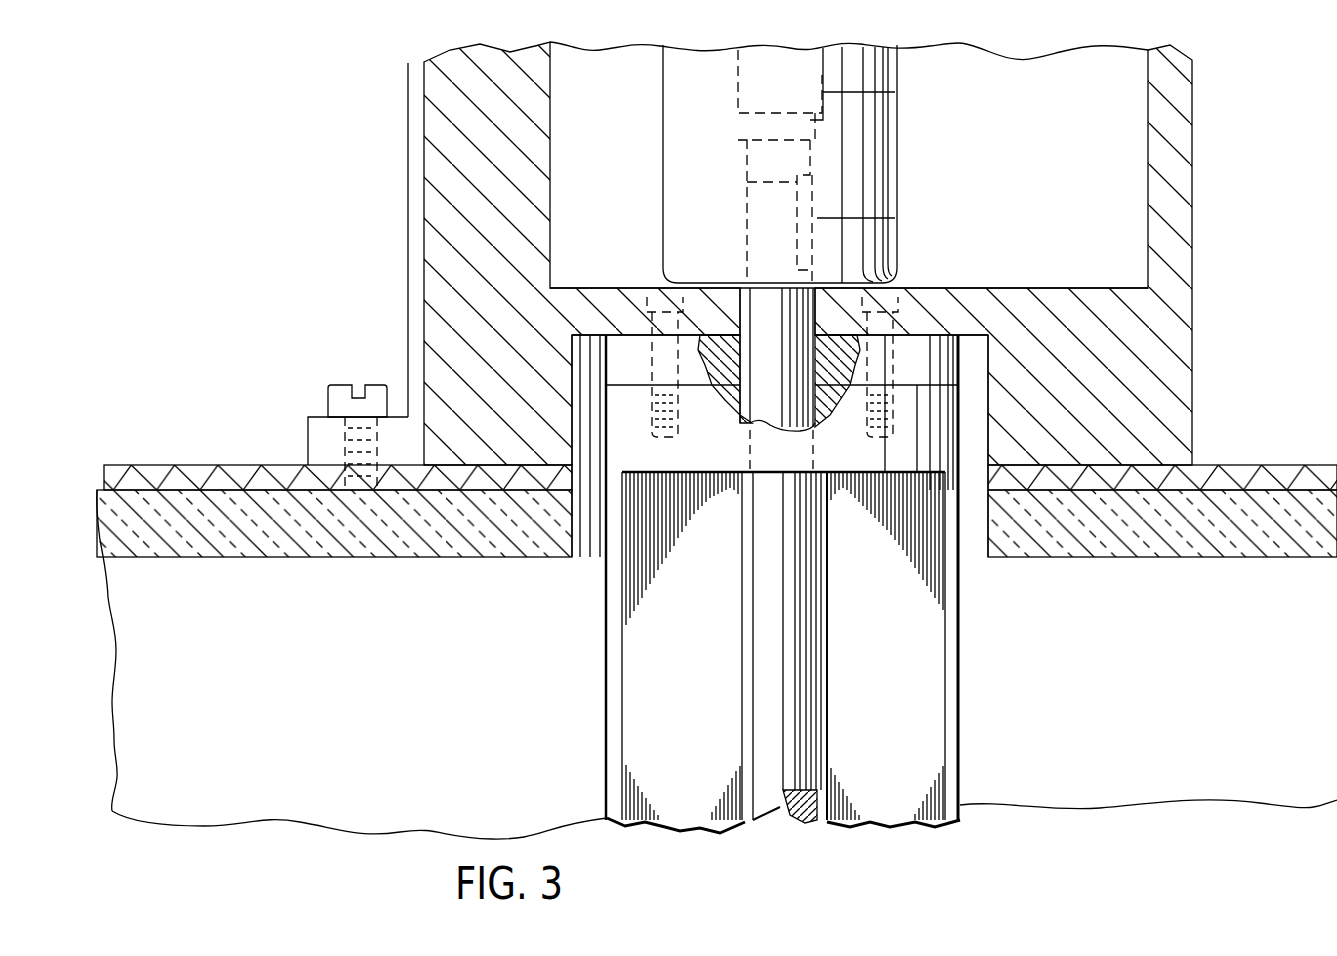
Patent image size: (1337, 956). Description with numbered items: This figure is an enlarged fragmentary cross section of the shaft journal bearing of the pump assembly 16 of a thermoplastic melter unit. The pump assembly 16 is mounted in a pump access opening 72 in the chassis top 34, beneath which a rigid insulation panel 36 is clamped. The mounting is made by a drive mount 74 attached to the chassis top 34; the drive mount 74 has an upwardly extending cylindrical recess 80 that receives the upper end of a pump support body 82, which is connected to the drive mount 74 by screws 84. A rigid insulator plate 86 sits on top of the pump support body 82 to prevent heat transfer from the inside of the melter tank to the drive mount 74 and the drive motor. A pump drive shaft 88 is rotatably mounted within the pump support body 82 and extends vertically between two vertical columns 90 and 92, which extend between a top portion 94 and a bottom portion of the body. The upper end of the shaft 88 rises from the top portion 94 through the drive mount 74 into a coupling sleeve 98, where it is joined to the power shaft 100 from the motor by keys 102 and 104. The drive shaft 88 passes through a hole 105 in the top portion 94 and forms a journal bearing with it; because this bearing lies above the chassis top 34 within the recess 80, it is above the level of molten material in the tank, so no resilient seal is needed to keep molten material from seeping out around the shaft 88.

The pump assembly 16 is at (595, 652).
The chassis top 34 is at (237, 465).
The rigid insulation panel 36 is at (238, 558).
The pump access opening 72 is at (988, 477).
The drive mount 74 is at (433, 300).
The cylindrical recess 80 is at (988, 348).
The pump support body 82 is at (605, 612).
The screws 84 is at (335, 385).
The rigid insulator plate 86 is at (923, 347).
The pump drive shaft 88 is at (820, 682).
The vertical column 90 is at (660, 715).
The vertical column 92 is at (930, 750).
The top portion 94 is at (847, 453).
The coupling sleeve 98 is at (883, 165).
The power shaft 100 is at (738, 78).
The key 102 is at (823, 90).
The key 104 is at (817, 218).
The hole 105 is at (758, 423).